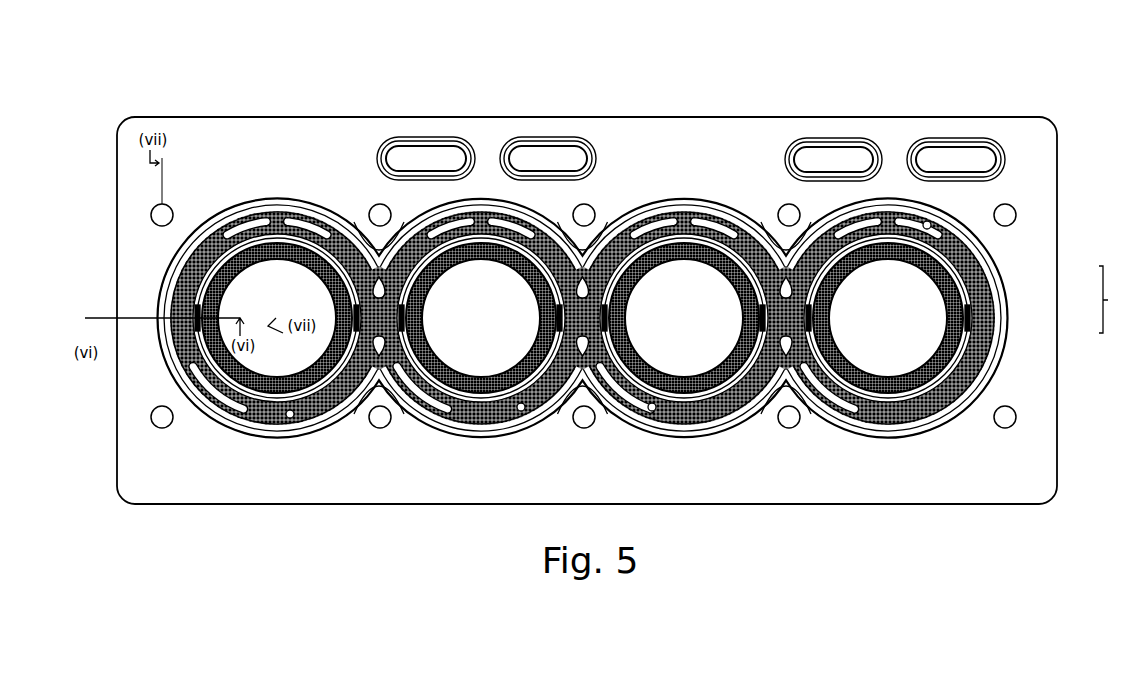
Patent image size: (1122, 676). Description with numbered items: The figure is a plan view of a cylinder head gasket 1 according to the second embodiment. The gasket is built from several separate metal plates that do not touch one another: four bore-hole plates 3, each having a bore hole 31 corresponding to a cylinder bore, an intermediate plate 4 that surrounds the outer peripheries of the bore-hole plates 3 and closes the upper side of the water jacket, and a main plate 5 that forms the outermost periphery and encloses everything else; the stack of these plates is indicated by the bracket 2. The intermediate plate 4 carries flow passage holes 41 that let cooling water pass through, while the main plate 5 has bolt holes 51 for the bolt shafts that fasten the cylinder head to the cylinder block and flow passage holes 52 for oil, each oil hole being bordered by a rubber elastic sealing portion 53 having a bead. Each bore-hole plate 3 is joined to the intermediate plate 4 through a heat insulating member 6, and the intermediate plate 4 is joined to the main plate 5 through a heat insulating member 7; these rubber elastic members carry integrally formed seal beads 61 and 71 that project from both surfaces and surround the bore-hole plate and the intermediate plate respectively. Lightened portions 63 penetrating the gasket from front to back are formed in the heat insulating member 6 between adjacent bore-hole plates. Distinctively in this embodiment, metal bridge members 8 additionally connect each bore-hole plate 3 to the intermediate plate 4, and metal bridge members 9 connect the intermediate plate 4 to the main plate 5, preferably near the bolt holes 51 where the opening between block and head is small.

The cylinder head gasket 1 is at (694, 89).
The laminated plate assembly 2 is at (1109, 299).
The bore-hole plate 3 is at (336, 402).
The intermediate plate 4 is at (986, 307).
The main plate 5 is at (1032, 335).
The heat insulating member 6 is at (222, 258).
The heat insulating member 7 is at (174, 258).
The bridge member 8 is at (277, 318).
The bridge member 9 is at (197, 248).
The bore hole 31 is at (283, 380).
The flow passage hole 41 is at (300, 221).
The bolt hole 51 is at (151, 211).
The flow passage hole 52 is at (541, 150).
The sealing portion 53 is at (416, 138).
The seal bead 61 is at (958, 400).
The lightened portion 63 is at (196, 322).
The seal bead 71 is at (940, 432).